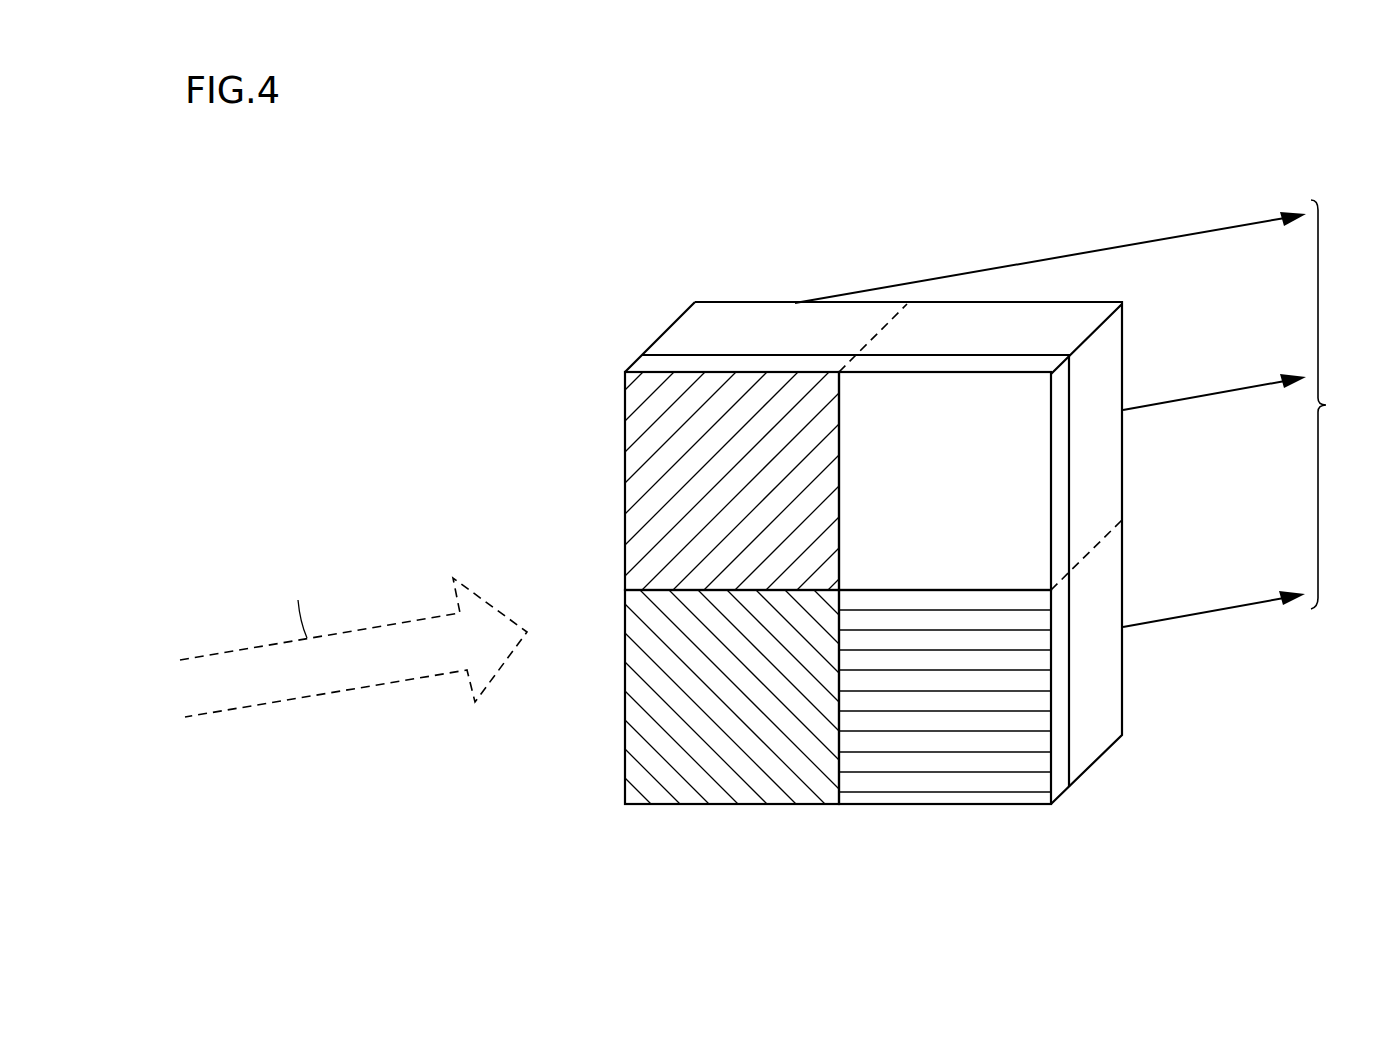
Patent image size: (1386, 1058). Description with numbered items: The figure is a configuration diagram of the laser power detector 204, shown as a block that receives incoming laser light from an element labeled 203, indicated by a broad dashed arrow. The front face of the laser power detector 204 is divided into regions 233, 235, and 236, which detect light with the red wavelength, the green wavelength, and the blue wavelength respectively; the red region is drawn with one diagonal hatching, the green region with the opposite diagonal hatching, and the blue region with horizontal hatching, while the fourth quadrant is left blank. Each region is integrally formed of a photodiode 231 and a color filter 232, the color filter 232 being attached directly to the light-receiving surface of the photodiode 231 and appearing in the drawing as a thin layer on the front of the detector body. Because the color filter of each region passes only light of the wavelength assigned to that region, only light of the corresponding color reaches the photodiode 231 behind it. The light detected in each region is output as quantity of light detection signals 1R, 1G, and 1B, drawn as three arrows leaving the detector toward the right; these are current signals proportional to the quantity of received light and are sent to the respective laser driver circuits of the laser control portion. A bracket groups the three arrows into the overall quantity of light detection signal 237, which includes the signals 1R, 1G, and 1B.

The laser power detector 204 is at (832, 248).
The photodiode 231 is at (729, 325).
The color filter 232 is at (673, 365).
The region for detecting red wavelength light 233 is at (648, 481).
The region for detecting green wavelength light 235 is at (648, 700).
The region for detecting blue wavelength light 236 is at (942, 782).
The quantity of light detection signal 237 is at (1085, 401).
The quantity of light detection signal 1R is at (1215, 230).
The quantity of light detection signal 1G is at (1216, 393).
The quantity of light detection signal 1B is at (1214, 607).
The laser light source 203 is at (280, 642).